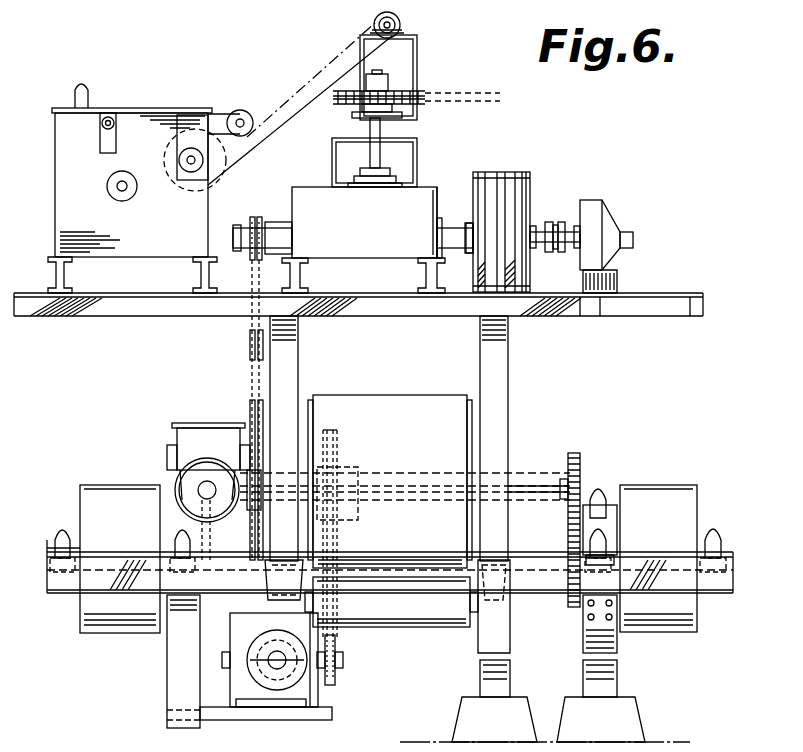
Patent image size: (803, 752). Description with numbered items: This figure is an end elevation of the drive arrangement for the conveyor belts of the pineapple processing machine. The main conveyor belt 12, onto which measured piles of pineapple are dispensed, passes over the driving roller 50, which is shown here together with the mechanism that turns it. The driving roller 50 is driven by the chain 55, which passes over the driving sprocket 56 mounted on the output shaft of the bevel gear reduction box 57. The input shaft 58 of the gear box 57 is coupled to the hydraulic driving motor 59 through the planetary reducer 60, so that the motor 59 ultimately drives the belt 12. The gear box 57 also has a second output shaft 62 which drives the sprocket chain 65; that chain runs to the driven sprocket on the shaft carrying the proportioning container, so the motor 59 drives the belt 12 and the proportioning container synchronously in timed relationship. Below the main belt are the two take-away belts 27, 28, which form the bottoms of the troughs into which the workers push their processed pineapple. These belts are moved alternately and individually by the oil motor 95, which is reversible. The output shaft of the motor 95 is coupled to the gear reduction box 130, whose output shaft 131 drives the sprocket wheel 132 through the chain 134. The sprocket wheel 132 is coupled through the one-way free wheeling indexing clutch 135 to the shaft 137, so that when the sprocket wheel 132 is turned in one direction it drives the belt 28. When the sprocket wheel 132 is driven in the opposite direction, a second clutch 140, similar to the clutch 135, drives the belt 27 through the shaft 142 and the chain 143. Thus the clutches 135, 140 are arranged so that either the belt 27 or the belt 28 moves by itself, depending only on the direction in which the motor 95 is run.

The conveyor belt 12 is at (418, 400).
The endless conveyor belt 27 is at (90, 516).
The endless conveyor belt 28 is at (663, 624).
The driving roller 50 is at (472, 410).
The chain 55 is at (252, 372).
The driving sprocket 56 is at (256, 218).
The bevel gear reduction box 57 is at (422, 192).
The input shaft 58 is at (450, 228).
The hydraulic driving motor 59 is at (605, 220).
The planetary reducer 60 is at (515, 176).
The second output shaft 62 is at (378, 145).
The sprocket chain 65 is at (462, 96).
The oil motor 95 is at (282, 688).
The gear reduction box 130 is at (315, 690).
The output shaft 131 is at (345, 662).
The sprocket wheel 132 is at (330, 436).
The chain 134 is at (332, 572).
The one-way free wheeling indexing clutch 135 is at (348, 470).
The shaft 137 is at (414, 495).
The clutch 140 is at (318, 468).
The shaft 142 is at (190, 492).
The chain 143 is at (207, 542).